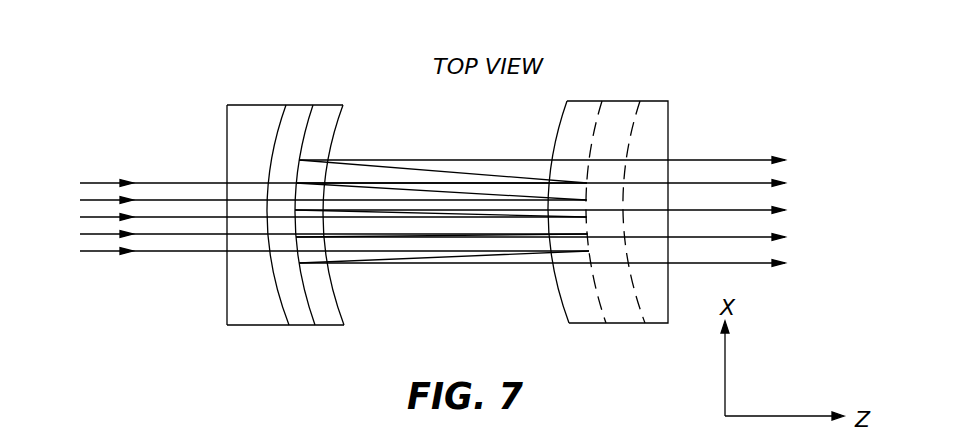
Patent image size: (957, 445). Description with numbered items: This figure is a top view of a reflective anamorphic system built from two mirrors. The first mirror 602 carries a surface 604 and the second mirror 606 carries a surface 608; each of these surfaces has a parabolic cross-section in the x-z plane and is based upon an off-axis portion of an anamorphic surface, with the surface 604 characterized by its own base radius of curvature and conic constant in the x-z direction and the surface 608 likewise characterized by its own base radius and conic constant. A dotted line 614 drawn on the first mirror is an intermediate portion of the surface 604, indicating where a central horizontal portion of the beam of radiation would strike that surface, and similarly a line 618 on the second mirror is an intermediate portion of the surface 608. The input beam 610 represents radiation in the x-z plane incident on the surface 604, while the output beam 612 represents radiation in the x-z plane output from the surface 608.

The Mirror 1 602 is at (649, 177).
The surface 604 is at (586, 103).
The dotted line 614 is at (602, 110).
The Mirror 2 606 is at (319, 179).
The surface 608 is at (308, 83).
The line 618 is at (300, 157).
The input beam 610 is at (72, 241).
The output beam 612 is at (841, 204).